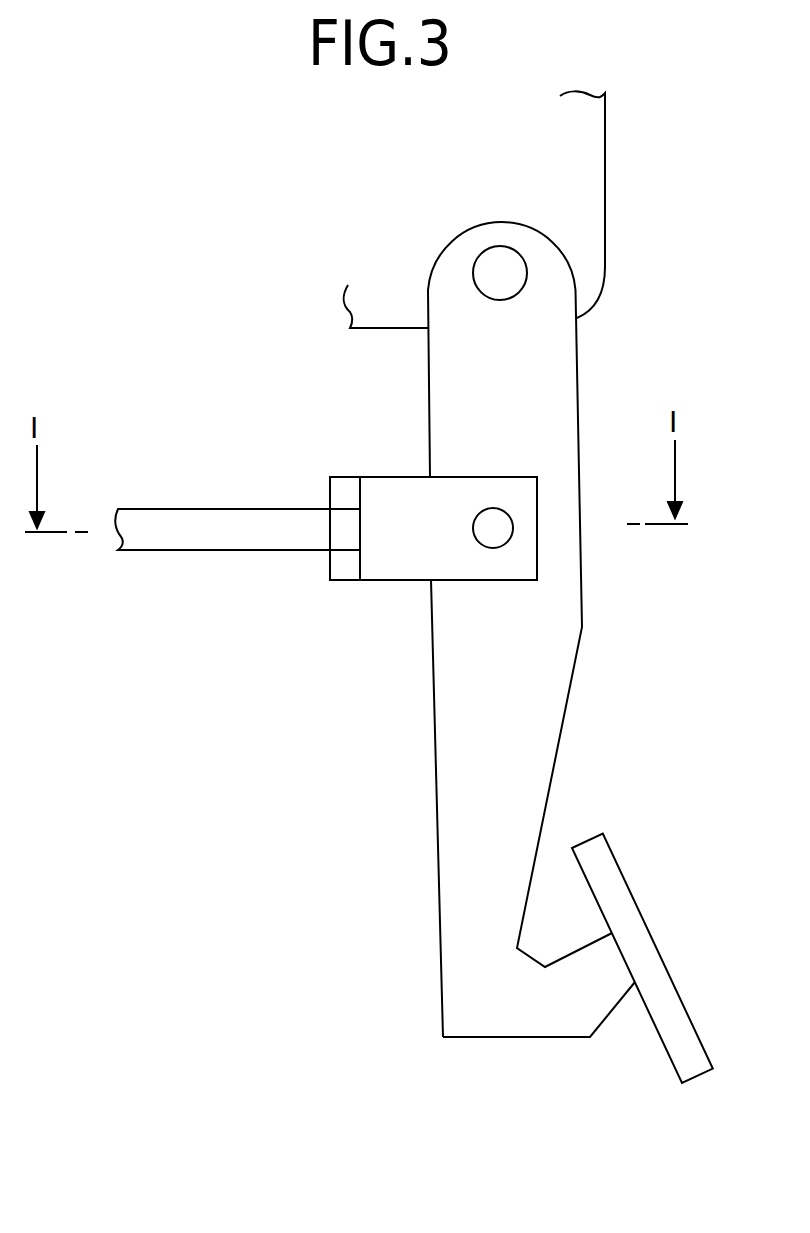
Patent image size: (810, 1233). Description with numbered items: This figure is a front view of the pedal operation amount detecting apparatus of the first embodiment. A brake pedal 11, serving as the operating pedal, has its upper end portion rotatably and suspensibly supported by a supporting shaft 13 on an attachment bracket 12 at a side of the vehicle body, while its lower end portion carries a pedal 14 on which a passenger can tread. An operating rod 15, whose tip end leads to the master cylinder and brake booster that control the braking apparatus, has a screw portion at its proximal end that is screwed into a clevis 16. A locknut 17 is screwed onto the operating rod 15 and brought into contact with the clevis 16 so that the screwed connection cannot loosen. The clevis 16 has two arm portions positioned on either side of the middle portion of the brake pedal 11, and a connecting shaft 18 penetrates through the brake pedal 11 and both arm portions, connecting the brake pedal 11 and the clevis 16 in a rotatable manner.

The brake pedal 11 is at (540, 693).
The attachment bracket 12 is at (593, 176).
The supporting shaft 13 is at (500, 273).
The pedal 14 is at (643, 955).
The operating rod 15 is at (172, 532).
The clevis 16 is at (385, 562).
The locknut 17 is at (347, 492).
The connecting shaft 18 is at (495, 528).